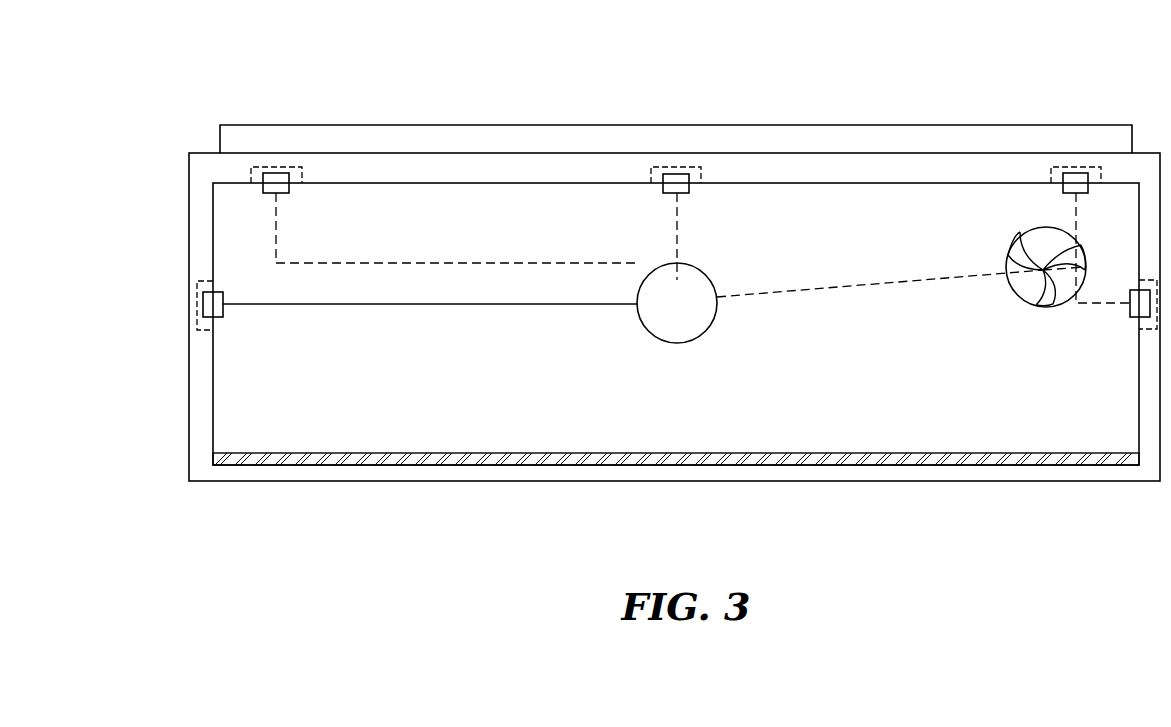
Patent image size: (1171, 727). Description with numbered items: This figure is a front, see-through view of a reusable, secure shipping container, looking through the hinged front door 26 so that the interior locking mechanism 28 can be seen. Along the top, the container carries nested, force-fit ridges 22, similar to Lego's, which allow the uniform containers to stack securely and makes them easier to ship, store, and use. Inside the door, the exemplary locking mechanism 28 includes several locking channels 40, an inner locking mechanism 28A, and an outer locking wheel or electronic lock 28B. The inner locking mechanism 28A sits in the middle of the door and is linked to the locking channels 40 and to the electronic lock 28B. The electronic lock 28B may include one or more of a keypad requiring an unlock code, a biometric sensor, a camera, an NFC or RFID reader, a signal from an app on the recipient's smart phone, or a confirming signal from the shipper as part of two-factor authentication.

The ridges 22 is at (300, 125).
The hinged front door 26 is at (292, 481).
The interior locking mechanism 28 is at (191, 522).
The inner locking mechanism 28A is at (697, 338).
The outer locking wheel or electronic lock 28B is at (1020, 300).
The locking channels 40 is at (263, 195).